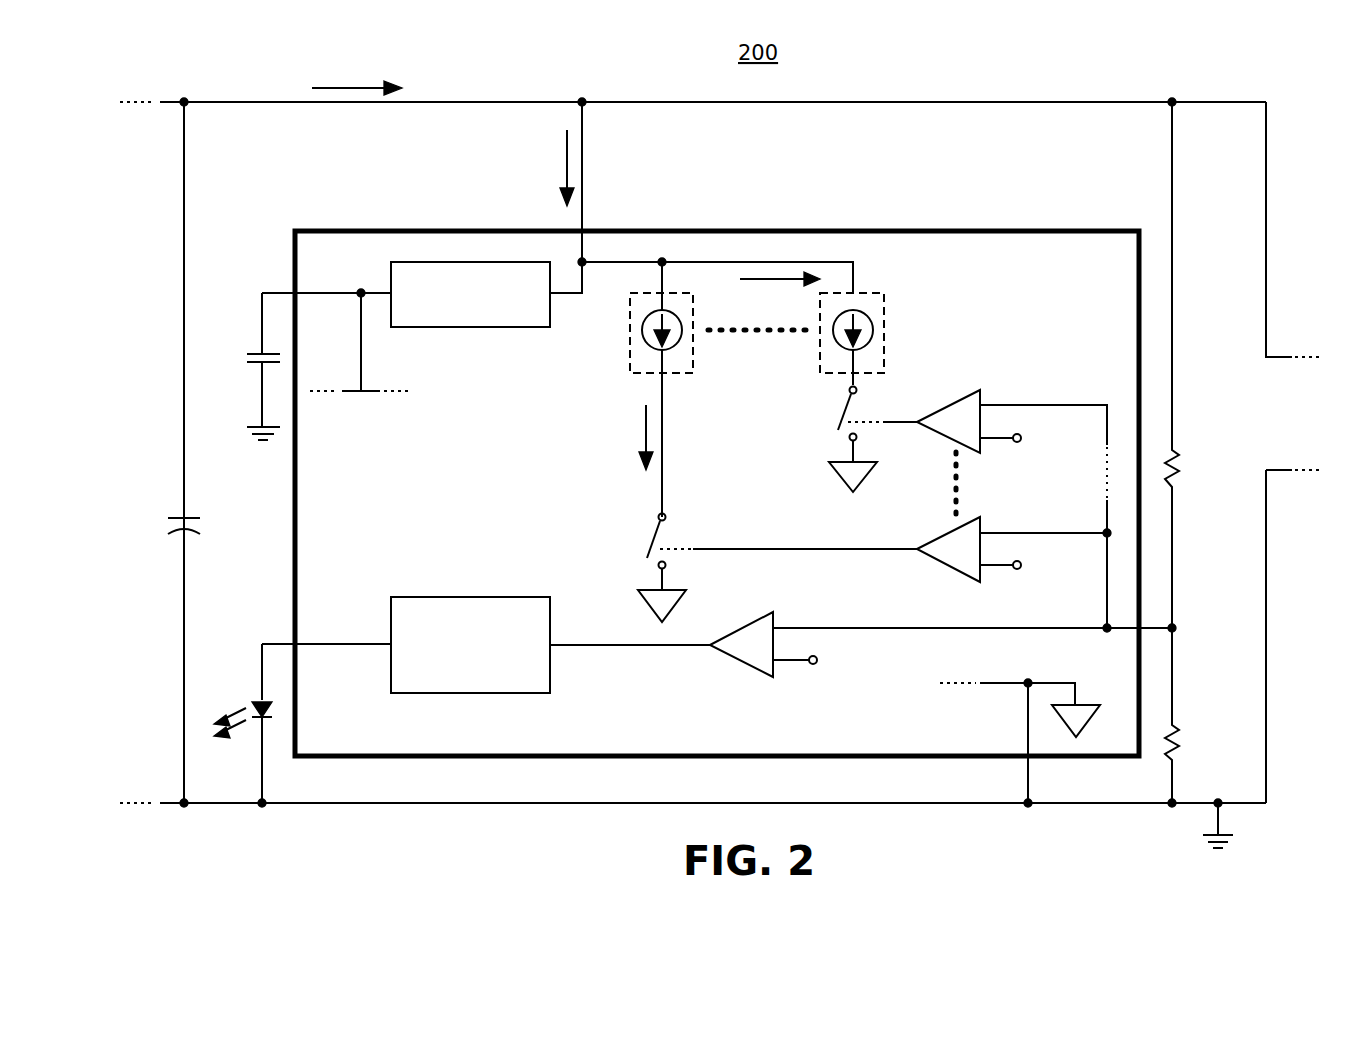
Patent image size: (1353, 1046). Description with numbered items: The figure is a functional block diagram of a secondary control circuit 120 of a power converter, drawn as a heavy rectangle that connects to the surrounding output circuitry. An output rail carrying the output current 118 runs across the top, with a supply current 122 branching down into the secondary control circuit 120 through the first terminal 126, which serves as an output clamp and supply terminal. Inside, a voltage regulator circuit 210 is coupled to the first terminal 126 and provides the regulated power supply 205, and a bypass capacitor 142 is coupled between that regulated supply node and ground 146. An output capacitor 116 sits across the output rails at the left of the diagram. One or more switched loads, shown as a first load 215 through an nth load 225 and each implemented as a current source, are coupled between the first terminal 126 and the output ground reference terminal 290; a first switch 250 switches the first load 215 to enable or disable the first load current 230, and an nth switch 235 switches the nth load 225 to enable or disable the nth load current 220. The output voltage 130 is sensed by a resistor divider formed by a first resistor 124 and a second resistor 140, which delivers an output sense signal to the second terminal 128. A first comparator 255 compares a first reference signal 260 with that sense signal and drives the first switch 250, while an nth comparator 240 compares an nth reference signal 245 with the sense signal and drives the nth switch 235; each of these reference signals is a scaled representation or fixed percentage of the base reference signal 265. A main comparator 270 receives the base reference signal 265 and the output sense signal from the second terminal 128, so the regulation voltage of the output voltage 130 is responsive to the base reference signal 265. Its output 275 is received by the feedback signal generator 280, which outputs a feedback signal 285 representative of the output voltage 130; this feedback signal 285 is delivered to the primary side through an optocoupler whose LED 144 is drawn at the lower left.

The output current 118 is at (333, 76).
The secondary control circuit 120 is at (376, 218).
The supply current 122 is at (556, 152).
The first terminal 126 is at (588, 213).
The voltage regulator circuit 210 is at (474, 334).
The regulated power supply V_REG 205 is at (366, 387).
The bypass capacitor C2 142 is at (258, 364).
The ground 146 is at (246, 437).
The capacitor C1 116 is at (168, 540).
The load AL1 215 is at (620, 358).
The load ALn 225 is at (888, 308).
The current In 220 is at (758, 286).
The current I1 230 is at (636, 448).
The switch SALn 235 is at (830, 428).
The switch SAL1 250 is at (640, 552).
The comparator 240 is at (942, 438).
The reference signal VREFn 245 is at (1022, 456).
The comparator 255 is at (944, 568).
The reference signal VREF1 260 is at (1022, 582).
The second terminal 128 is at (1180, 628).
The comparator 270 is at (740, 670).
The reference signal VREF0 265 is at (816, 680).
The output of comparator 275 is at (642, 650).
The feedback signal generator 280 is at (478, 594).
The feedback signal 285 is at (356, 643).
The LED 144 is at (256, 690).
The output ground reference terminal G 290 is at (992, 684).
The resistor R1 124 is at (1190, 485).
The resistor R2 140 is at (1188, 724).
The output voltage VO 130 is at (1266, 404).